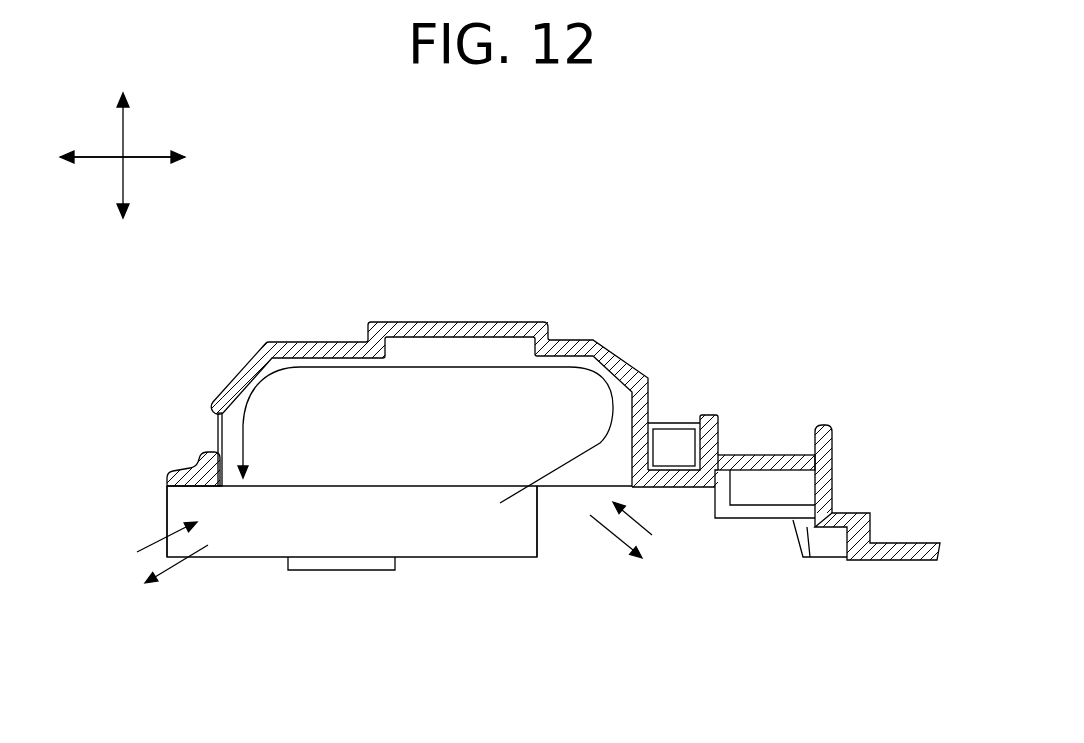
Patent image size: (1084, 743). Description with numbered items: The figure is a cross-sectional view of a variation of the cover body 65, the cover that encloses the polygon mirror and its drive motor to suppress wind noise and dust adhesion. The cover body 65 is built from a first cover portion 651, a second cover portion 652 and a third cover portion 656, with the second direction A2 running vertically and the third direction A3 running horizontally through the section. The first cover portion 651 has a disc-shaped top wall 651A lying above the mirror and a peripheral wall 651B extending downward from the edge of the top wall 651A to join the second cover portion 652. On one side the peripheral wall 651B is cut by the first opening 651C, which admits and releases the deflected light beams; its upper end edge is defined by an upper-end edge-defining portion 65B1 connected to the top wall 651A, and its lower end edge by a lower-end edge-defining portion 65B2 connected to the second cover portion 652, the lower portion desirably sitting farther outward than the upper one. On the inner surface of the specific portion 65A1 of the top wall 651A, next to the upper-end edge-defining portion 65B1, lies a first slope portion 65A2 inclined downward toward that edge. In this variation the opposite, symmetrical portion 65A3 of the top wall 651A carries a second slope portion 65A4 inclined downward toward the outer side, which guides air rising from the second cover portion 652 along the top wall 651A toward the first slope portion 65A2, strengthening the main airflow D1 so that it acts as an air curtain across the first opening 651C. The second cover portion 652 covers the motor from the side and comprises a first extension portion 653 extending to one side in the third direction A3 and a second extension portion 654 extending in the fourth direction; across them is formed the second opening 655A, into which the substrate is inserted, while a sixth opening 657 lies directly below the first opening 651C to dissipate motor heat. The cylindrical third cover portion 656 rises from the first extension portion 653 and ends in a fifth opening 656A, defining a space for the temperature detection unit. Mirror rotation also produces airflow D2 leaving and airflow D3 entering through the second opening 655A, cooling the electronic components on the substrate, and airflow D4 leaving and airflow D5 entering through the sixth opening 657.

The cover body 65 is at (395, 274).
The first cover portion 651 is at (459, 365).
The top wall 651A is at (515, 322).
The peripheral wall 651B is at (650, 397).
The first opening 651C is at (218, 428).
The specific portion 65A1 is at (237, 373).
The first slope portion 65A2 is at (264, 372).
The symmetrical portion 65A3 is at (620, 346).
The second slope portion 65A4 is at (636, 377).
The upper-end edge-defining portion 65B1 is at (208, 412).
The lower-end edge-defining portion 65B2 is at (195, 462).
The second cover portion 652 is at (441, 512).
The first extension portion 653 is at (673, 463).
The second extension portion 654 is at (433, 543).
The second opening 655A is at (537, 537).
The third cover portion 656 is at (827, 479).
The fifth opening 656A is at (815, 427).
The sixth opening 657 is at (165, 505).
The main airflow D1 is at (447, 368).
The airflow D2 is at (604, 535).
The airflow D3 is at (640, 523).
The airflow D4 is at (180, 572).
The airflow D5 is at (150, 546).
The second direction A2 is at (125, 130).
The third direction A3 is at (148, 158).